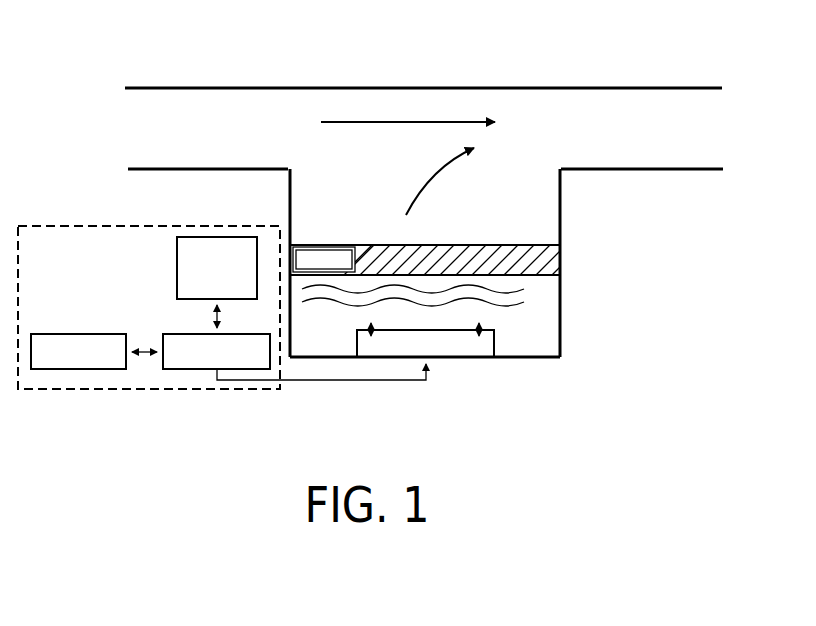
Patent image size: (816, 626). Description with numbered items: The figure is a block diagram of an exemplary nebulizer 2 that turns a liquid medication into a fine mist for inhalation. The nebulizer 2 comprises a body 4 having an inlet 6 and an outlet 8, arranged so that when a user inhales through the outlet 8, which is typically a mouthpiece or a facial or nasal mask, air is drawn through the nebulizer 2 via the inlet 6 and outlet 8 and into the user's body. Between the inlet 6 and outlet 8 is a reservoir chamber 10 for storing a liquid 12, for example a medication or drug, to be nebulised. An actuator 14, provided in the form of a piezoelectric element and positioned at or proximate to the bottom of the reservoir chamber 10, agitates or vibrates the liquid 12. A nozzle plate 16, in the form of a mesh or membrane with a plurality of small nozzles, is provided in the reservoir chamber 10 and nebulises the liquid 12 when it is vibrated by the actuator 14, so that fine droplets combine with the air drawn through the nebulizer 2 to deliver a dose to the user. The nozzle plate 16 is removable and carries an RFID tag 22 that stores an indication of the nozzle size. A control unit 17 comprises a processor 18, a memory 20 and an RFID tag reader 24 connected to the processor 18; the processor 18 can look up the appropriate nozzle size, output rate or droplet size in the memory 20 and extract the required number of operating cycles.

The nebulizer 2 is at (214, 52).
The body 4 is at (435, 87).
The inlet 6 is at (153, 124).
The outlet 8 is at (691, 124).
The reservoir chamber 10 is at (562, 307).
The liquid 12 is at (550, 350).
The actuator 14 is at (461, 343).
The nozzle plate 16 is at (550, 263).
The control unit 17 is at (58, 210).
The processor 18 is at (183, 362).
The memory 20 is at (79, 362).
The RFID tag 22 is at (350, 248).
The RFID tag reader 24 is at (180, 252).